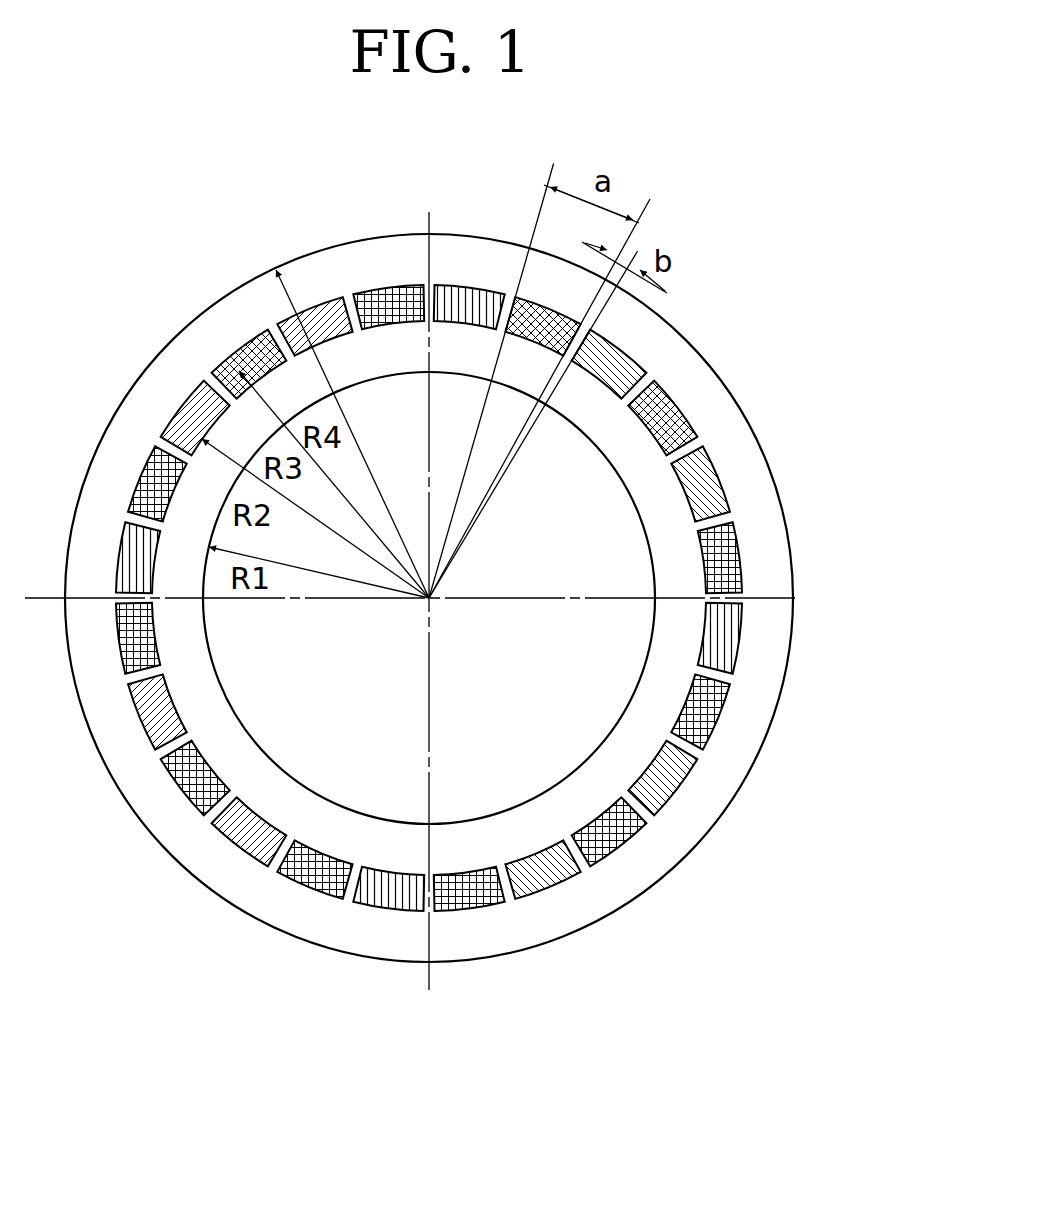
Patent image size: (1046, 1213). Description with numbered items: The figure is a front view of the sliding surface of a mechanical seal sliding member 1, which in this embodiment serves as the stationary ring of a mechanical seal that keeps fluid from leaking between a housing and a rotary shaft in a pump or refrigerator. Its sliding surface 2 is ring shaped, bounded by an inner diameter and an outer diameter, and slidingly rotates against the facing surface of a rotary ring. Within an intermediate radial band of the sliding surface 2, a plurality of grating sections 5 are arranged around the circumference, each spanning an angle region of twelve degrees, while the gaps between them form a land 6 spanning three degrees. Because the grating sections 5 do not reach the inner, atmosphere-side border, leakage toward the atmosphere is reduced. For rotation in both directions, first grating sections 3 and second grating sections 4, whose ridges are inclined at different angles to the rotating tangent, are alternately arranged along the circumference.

The mechanical seal sliding member 1 is at (470, 628).
The sliding surface 2 is at (753, 715).
The first grating sections 3 is at (756, 468).
The second grating sections 4 is at (673, 402).
The grating sections 5 is at (747, 413).
The land 6 is at (732, 508).